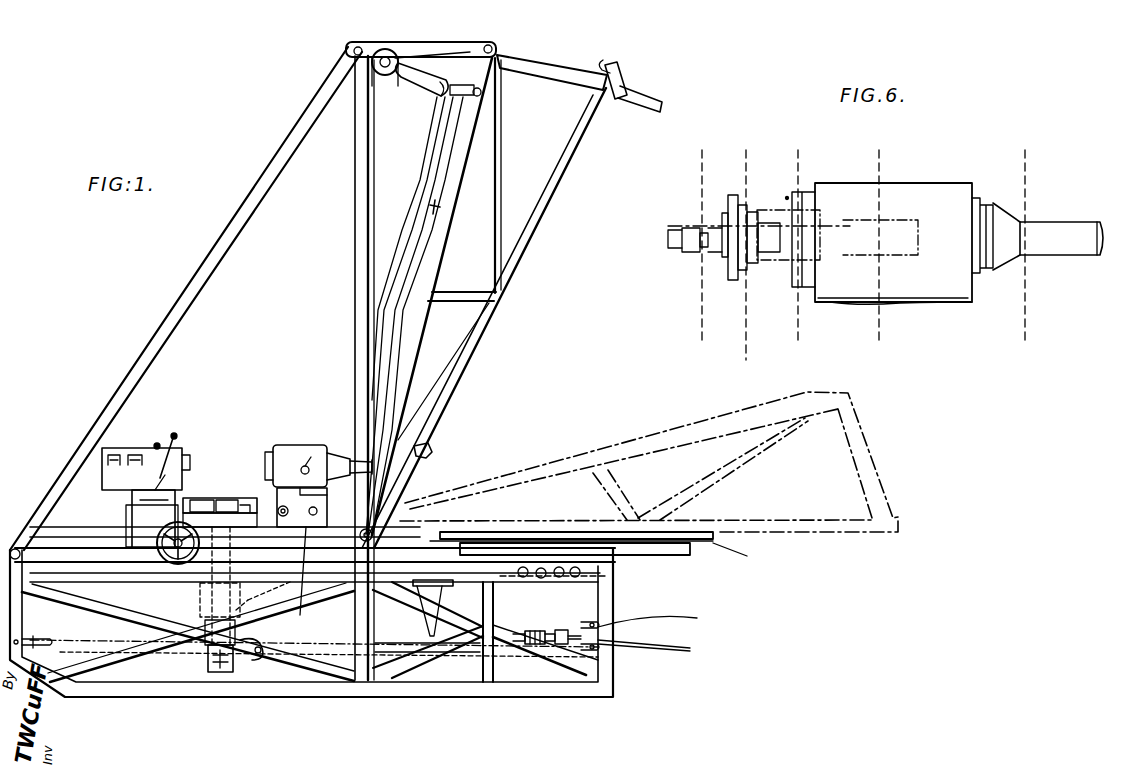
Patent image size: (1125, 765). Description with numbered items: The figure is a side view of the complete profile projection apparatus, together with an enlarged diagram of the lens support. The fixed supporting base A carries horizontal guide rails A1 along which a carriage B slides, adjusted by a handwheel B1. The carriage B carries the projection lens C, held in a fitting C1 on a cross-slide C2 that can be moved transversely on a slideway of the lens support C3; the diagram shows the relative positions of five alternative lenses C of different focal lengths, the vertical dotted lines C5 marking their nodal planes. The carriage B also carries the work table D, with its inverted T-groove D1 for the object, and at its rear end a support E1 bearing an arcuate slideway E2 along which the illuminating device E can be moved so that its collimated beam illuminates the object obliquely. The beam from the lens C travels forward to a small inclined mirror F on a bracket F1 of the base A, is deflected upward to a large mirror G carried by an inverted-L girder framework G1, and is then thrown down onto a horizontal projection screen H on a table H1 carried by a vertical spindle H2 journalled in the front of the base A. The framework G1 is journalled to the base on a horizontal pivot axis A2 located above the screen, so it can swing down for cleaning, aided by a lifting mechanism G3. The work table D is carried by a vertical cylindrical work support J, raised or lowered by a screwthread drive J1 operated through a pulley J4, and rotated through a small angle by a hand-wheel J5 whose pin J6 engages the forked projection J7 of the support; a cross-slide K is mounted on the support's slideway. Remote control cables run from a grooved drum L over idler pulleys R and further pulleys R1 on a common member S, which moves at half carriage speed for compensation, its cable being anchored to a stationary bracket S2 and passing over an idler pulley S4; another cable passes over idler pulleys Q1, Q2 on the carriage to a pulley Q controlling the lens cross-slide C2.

In FIG. 1, the fixed supporting base A is at (87, 597).
In FIG. 1, the horizontal guide rails A1 is at (65, 547).
In FIG. 1, the horizontal pivot axis A2 is at (358, 548).
In FIG. 1, the carriage B is at (140, 537).
In FIG. 1, the handwheel B1 is at (160, 568).
In FIG. 1, the projection lens C is at (345, 464).
In FIG. 6, the projection lens C is at (807, 250).
In FIG. 1, the lens fitting C1 is at (292, 462).
In FIG. 1, the cross-slide C2 is at (316, 491).
In FIG. 6, the cross-slide C2 is at (937, 303).
In FIG. 1, the lens support C3 is at (303, 581).
In FIG. 6, the nodal plane lines C5 is at (878, 156).
In FIG. 1, the work table D is at (212, 503).
In FIG. 1, the inverted T-groove D1 is at (223, 503).
In FIG. 1, the illuminating device E is at (150, 455).
In FIG. 1, the illuminating device support E1 is at (143, 508).
In FIG. 1, the arcuate slideway E2 is at (163, 492).
In FIG. 1, the small inclined mirror F is at (428, 450).
In FIG. 1, the bracket F1 is at (423, 496).
In FIG. 1, the large mirror G is at (636, 105).
In FIG. 1, the girder framework G1 is at (360, 280).
In FIG. 1, the lifting mechanism G3 is at (440, 80).
In FIG. 1, the projection screen H is at (713, 539).
In FIG. 1, the table H1 is at (668, 551).
In FIG. 1, the vertical spindle H2 is at (657, 619).
In FIG. 1, the work support J is at (203, 590).
In FIG. 1, the screwthread drive J1 is at (210, 650).
In FIG. 1, the pulley J4 is at (208, 660).
In FIG. 1, the hand-wheel J5 is at (285, 508).
In FIG. 1, the pin J6 is at (281, 510).
In FIG. 1, the projection J7 is at (257, 508).
In FIG. 1, the cross-slide K is at (198, 507).
In FIG. 1, the grooved drum L is at (575, 567).
In FIG. 1, the pulley Q is at (311, 513).
In FIG. 1, the idler pulley Q1 is at (262, 654).
In FIG. 1, the idler pulley Q2 is at (263, 596).
In FIG. 1, the idler pulleys R is at (654, 647).
In FIG. 1, the pulley R1 is at (572, 628).
In FIG. 1, the member S is at (533, 631).
In FIG. 1, the stationary bracket S2 is at (433, 592).
In FIG. 1, the idler pulley S4 is at (36, 642).